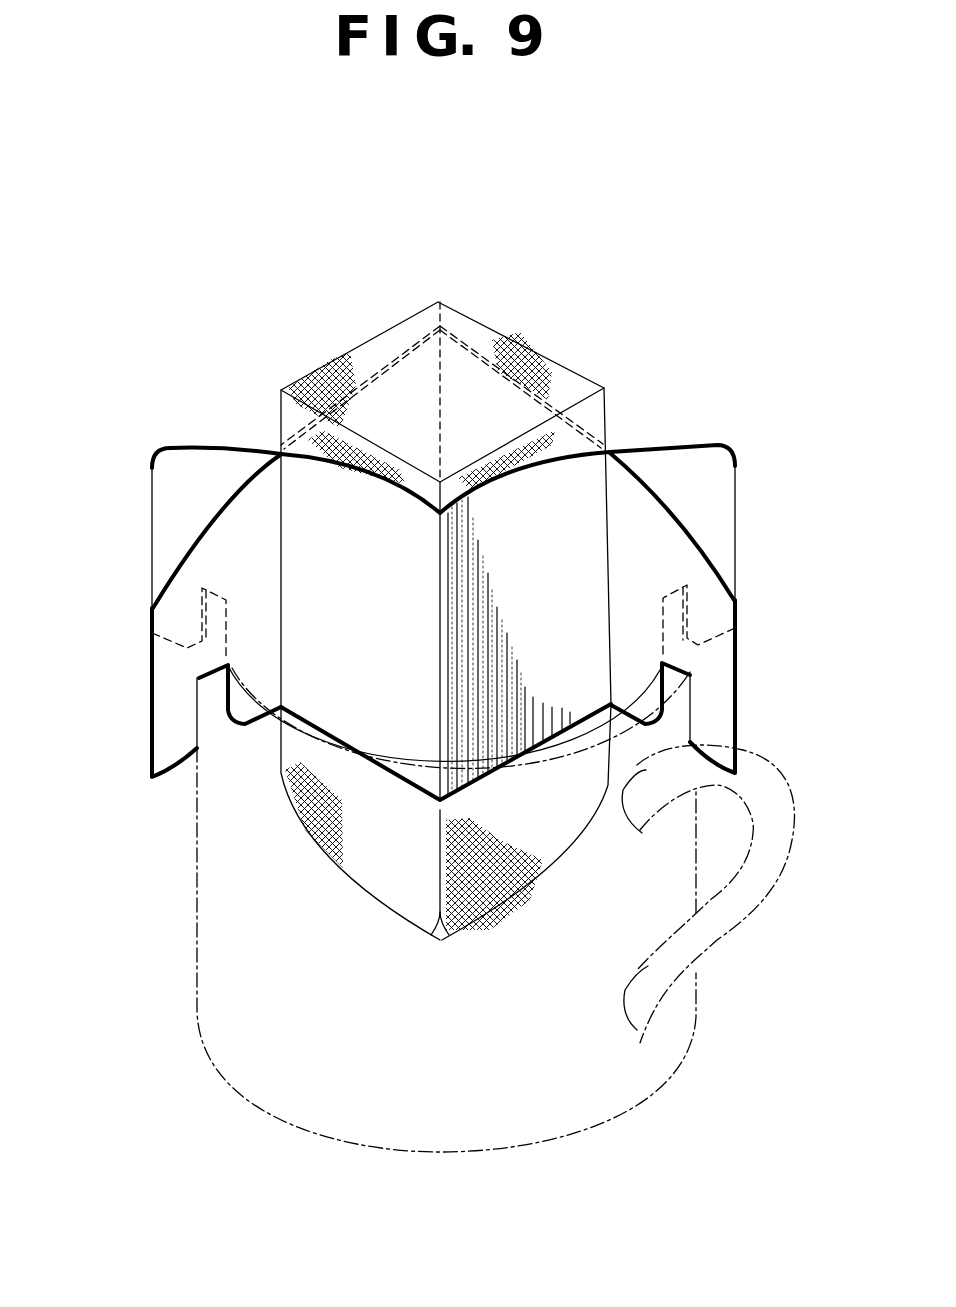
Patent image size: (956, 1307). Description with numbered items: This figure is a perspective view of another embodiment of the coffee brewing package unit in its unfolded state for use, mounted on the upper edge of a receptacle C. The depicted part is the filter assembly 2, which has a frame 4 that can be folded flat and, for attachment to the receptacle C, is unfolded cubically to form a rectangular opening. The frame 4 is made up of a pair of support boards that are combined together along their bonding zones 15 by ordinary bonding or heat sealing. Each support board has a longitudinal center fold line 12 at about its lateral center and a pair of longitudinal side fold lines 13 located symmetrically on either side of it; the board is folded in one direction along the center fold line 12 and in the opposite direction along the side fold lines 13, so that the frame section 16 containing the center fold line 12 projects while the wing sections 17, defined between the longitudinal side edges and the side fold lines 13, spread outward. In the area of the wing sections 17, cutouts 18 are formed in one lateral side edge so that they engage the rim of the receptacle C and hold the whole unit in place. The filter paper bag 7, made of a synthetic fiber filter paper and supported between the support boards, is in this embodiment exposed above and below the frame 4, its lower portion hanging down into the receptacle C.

The filter assembly 2 is at (612, 363).
The filter paper bag 7 is at (482, 332).
The frame 4 is at (617, 443).
The bonding zone 15 is at (277, 453).
The frame section 16 is at (292, 513).
The wing section 17 is at (185, 473).
The longitudinal side fold line 13 is at (277, 562).
The cutout 18 is at (217, 698).
The longitudinal center fold line 12 is at (440, 710).
The receptacle C is at (197, 890).